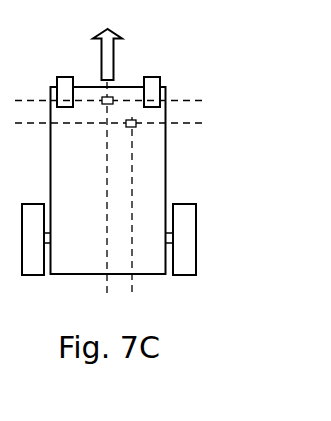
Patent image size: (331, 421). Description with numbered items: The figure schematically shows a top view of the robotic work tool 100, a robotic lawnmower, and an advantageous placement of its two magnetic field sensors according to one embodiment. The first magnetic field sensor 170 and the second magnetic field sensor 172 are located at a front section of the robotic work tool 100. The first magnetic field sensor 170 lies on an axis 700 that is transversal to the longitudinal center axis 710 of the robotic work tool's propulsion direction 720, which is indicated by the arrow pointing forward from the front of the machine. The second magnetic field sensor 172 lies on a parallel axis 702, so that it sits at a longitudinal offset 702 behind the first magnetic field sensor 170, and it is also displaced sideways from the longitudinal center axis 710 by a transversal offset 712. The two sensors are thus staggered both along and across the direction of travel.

The robotic work tool 100 is at (147, 197).
The first magnetic field sensor 170 is at (103, 96).
The second magnetic field sensor 172 is at (132, 119).
The axis transversal to the longitudinal center axis 700 is at (126, 101).
The parallel axis / longitudinal offset 702 is at (126, 123).
The longitudinal center axis 710 is at (96, 201).
The transversal offset 712 is at (141, 219).
The propulsion direction 720 is at (116, 46).